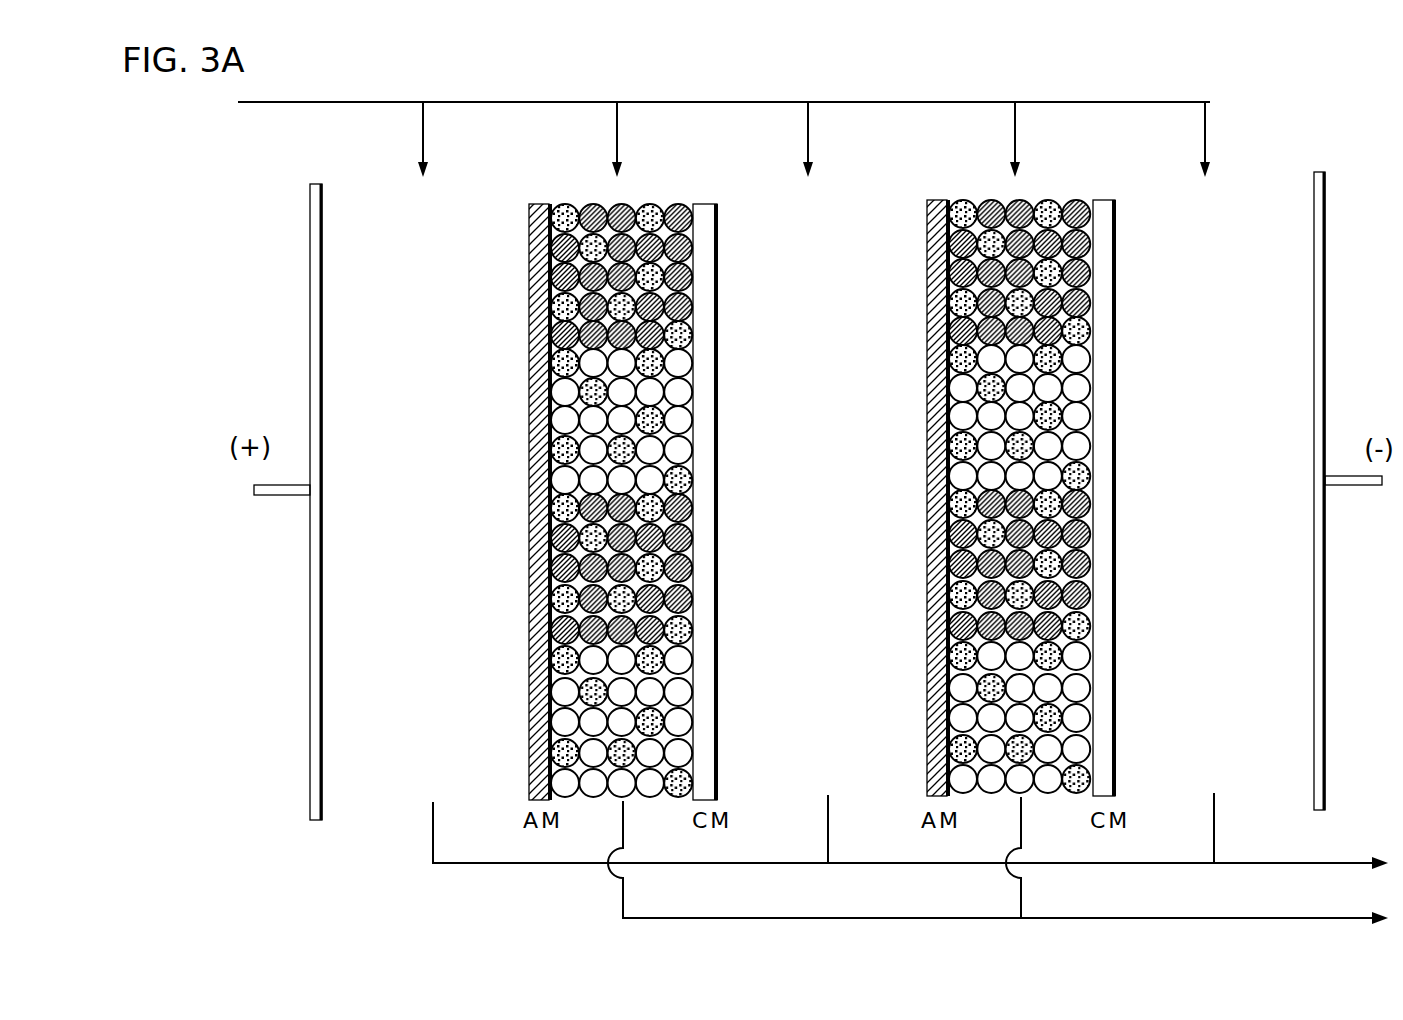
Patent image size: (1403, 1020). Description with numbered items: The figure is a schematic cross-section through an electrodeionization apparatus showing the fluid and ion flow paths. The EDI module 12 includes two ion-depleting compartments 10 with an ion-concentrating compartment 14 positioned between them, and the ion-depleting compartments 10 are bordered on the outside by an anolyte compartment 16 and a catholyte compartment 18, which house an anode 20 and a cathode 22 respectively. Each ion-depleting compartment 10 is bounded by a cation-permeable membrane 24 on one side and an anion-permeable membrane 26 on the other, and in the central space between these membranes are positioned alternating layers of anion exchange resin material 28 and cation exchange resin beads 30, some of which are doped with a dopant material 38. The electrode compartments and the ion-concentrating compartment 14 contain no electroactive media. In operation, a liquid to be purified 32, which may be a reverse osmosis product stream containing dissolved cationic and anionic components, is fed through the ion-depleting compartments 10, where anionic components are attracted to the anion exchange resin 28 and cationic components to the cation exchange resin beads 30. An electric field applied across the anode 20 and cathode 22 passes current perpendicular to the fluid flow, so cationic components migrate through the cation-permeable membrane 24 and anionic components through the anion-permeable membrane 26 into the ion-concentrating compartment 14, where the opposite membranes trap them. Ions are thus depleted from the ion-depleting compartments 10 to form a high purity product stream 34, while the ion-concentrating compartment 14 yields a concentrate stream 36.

The ion-depleting compartment 10 is at (823, 484).
The EDI module 12 is at (206, 342).
The ion-concentrating compartment 14 is at (846, 188).
The anolyte compartment 16 is at (365, 192).
The catholyte compartment 18 is at (1272, 160).
The anode 20 is at (282, 497).
The cathode 22 is at (1348, 487).
The cation-permeable membrane 24 is at (705, 203).
The anion-permeable membrane 26 is at (540, 204).
The anion exchange resin material 28 is at (678, 204).
The cation exchange resin beads 30 is at (593, 800).
The liquid to be purified 32 is at (322, 102).
The high purity product stream 34 is at (1082, 918).
The concentrate stream 36 is at (1190, 864).
The dopant material 38 is at (650, 204).